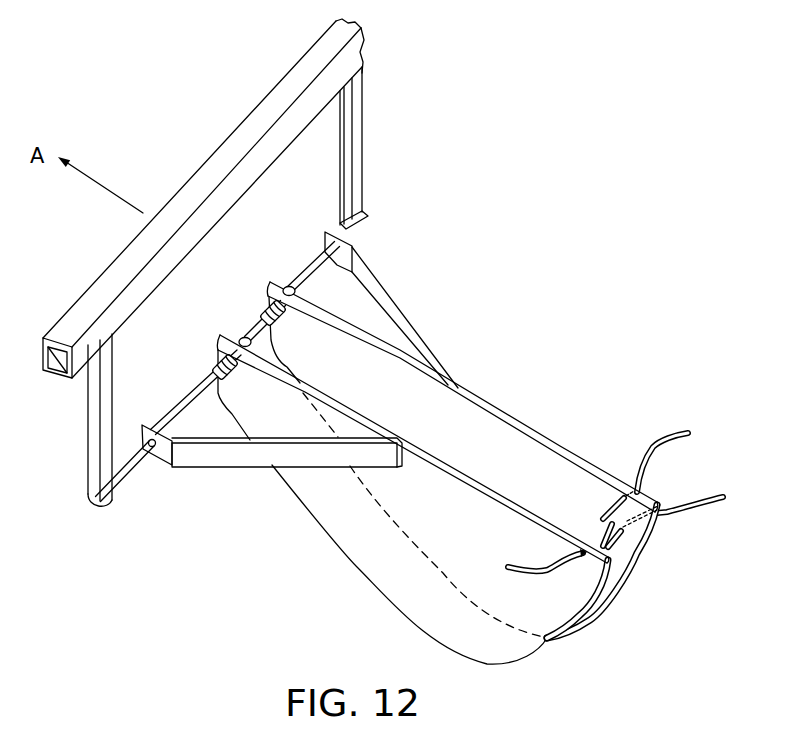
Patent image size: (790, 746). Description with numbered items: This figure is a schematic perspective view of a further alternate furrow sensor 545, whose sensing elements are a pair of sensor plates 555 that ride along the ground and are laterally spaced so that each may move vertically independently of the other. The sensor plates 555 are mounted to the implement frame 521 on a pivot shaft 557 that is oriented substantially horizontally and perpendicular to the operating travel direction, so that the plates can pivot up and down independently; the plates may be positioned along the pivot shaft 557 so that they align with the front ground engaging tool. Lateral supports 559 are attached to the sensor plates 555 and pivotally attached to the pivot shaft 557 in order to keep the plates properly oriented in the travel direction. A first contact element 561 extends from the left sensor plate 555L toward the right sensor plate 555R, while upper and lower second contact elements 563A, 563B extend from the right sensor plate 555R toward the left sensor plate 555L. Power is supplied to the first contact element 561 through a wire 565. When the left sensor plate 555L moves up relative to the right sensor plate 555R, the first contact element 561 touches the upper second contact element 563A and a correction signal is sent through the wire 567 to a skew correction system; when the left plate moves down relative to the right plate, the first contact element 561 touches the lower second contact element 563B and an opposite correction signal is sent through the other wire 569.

The implement frame 521 is at (175, 195).
The furrow sensor 545 is at (489, 206).
The sensor plates 555 is at (377, 453).
The left sensor plate 555L is at (355, 568).
The right sensor plate 555R is at (473, 385).
The pivot shaft 557 is at (128, 477).
The lateral supports 559 is at (392, 298).
The first contact element 561 is at (600, 523).
The upper second contact element 563A is at (604, 497).
The lower second contact element 563B is at (622, 533).
The wire 565 is at (542, 575).
The wire 567 is at (657, 434).
The other wire 569 is at (690, 498).